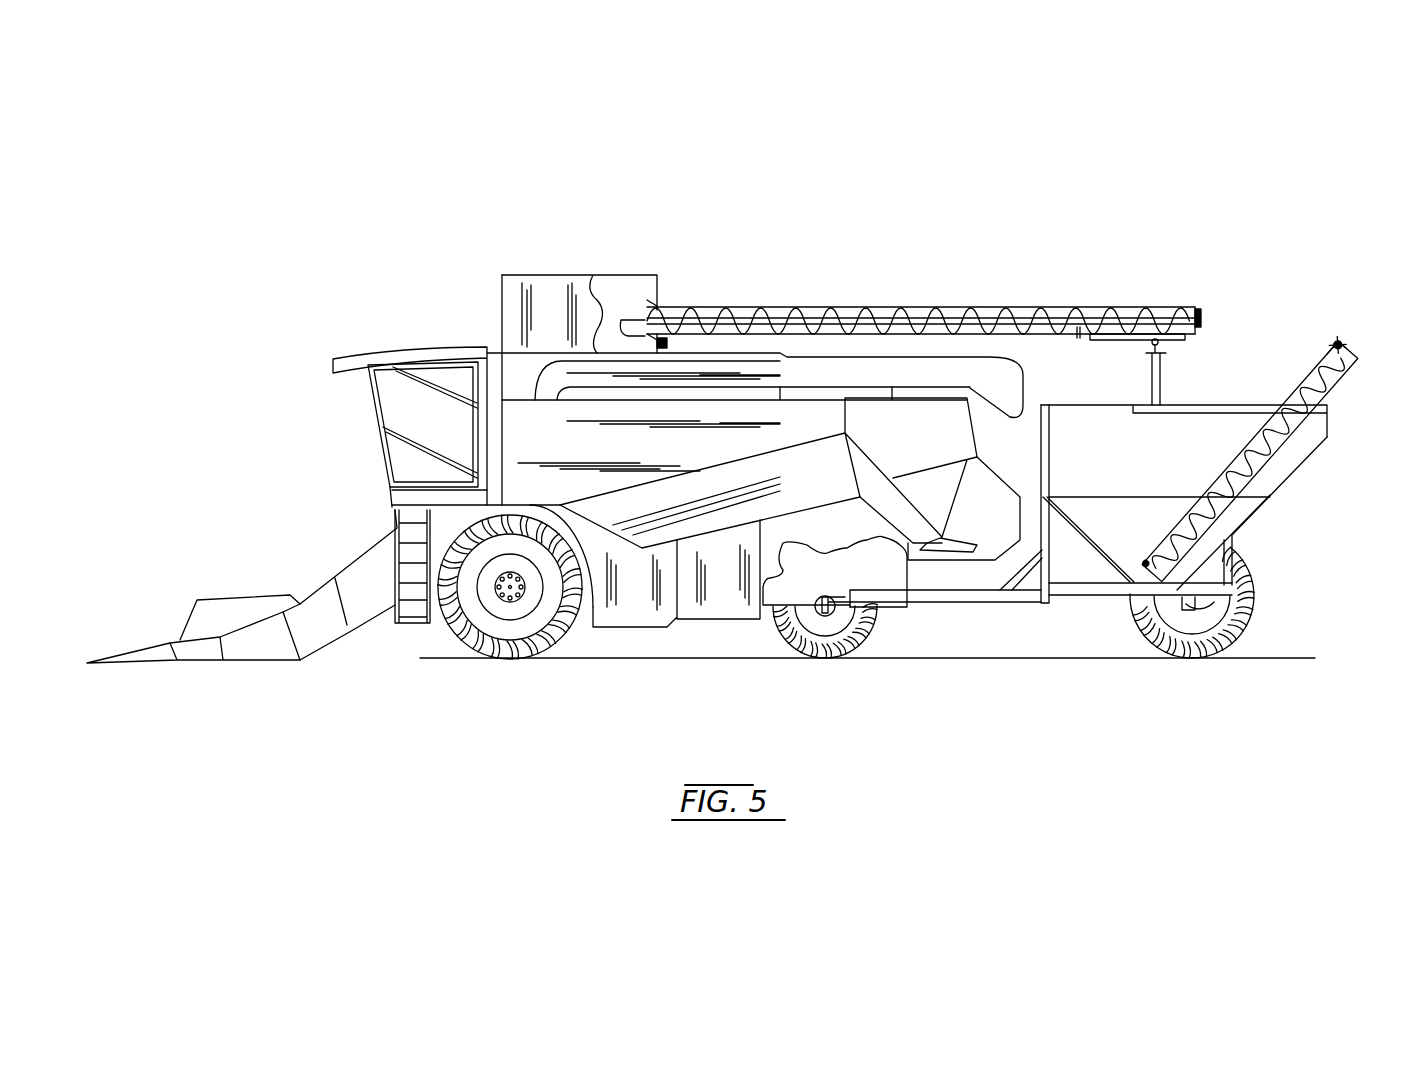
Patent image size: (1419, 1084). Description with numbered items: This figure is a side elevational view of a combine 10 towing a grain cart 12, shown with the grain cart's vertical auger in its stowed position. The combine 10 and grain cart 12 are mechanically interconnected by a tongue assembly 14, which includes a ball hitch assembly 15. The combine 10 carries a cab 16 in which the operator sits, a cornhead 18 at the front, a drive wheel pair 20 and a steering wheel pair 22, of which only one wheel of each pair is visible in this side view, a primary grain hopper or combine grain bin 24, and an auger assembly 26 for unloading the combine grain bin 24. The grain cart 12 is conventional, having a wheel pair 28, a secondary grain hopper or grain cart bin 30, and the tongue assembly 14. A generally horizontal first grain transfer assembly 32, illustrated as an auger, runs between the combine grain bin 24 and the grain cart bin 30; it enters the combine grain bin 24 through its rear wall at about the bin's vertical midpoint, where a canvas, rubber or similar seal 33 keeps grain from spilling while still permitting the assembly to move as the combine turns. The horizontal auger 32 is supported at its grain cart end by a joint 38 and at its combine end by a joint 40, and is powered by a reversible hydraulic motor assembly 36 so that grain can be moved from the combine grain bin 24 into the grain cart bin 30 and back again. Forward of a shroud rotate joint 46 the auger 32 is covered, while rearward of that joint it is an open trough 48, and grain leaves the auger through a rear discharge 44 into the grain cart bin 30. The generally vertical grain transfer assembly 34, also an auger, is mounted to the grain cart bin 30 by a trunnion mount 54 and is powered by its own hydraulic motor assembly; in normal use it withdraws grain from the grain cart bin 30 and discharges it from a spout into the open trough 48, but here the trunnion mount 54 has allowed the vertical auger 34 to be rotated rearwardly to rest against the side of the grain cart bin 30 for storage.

The combine 10 is at (800, 215).
The grain cart 12 is at (1216, 438).
The tongue assembly 14 is at (973, 625).
The ball hitch assembly 15 is at (842, 607).
The cab 16 is at (428, 343).
The cornhead 18 is at (148, 667).
The drive wheel pair 20 is at (480, 662).
The steering wheel pair 22 is at (830, 658).
The combine grain bin 24 is at (560, 277).
The auger assembly 26 is at (850, 358).
The wheel pair 28 is at (1260, 590).
The grain cart bin 30 is at (1212, 526).
The first grain transfer assembly 32 is at (931, 278).
The seal 33 is at (648, 300).
The vertical grain transfer assembly 34 is at (1264, 458).
The hydraulic motor assembly 36 is at (1197, 307).
The joint 38 is at (1148, 347).
The joint 40 is at (672, 338).
The rear discharge 44 is at (1187, 332).
The shroud rotate joint 46 is at (1078, 307).
The open trough 48 is at (1137, 307).
The trunnion mount 54 is at (1122, 607).